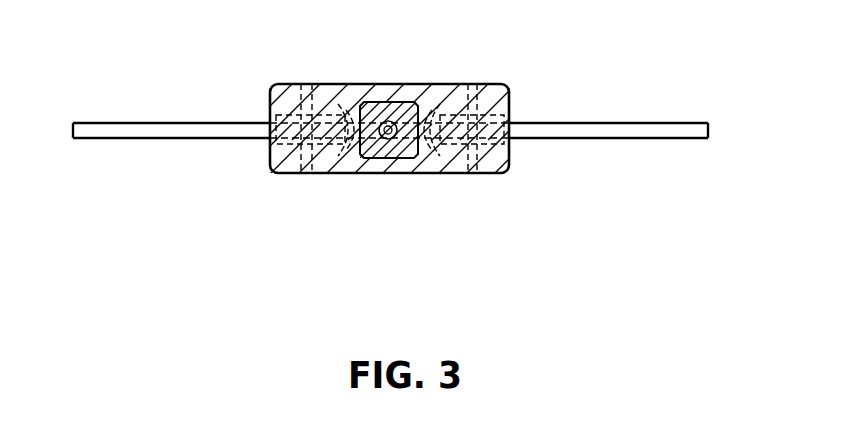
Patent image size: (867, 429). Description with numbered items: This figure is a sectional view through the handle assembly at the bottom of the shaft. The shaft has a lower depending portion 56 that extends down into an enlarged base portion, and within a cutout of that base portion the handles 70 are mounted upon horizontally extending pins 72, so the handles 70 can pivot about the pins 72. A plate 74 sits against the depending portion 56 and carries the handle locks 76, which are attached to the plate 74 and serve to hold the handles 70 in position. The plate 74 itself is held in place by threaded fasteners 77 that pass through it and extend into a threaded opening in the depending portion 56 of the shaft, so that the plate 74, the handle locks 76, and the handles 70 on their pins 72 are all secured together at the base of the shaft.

The handles 70 is at (175, 127).
The horizontally extending pins 72 is at (482, 100).
The plate 74 is at (406, 96).
The lower depending portion 56 is at (413, 102).
The handle locks 76 is at (340, 110).
The threaded fasteners 77 is at (382, 158).